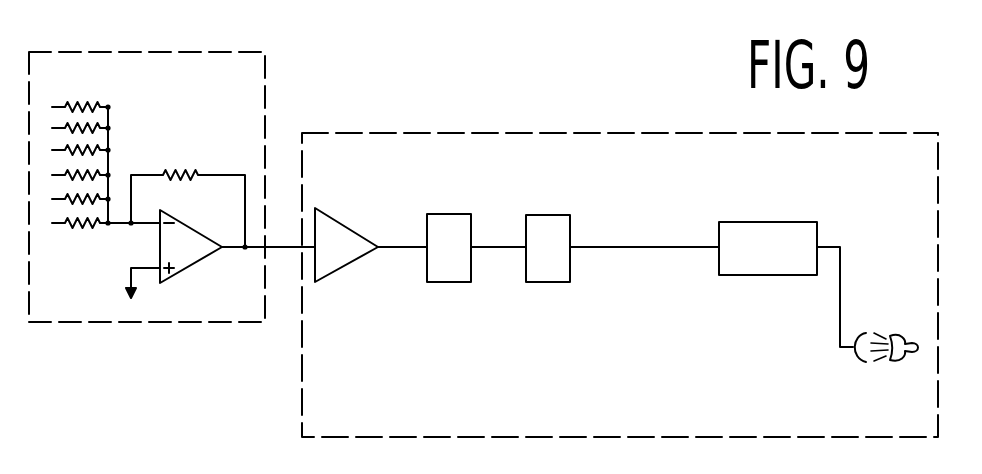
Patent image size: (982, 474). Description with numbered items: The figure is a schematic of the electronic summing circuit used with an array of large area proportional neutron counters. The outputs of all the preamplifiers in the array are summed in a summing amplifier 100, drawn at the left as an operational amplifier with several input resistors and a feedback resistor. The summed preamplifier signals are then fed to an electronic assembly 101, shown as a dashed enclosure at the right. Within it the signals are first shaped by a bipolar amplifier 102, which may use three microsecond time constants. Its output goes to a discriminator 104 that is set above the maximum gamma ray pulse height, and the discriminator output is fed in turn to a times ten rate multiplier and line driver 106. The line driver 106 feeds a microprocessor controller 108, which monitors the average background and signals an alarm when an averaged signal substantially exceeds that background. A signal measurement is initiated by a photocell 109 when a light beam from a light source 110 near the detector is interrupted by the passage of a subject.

The summing amplifier 100 is at (202, 53).
The electronic assembly 101 is at (530, 133).
The bipolar amplifier 102 is at (343, 268).
The discriminator 104 is at (472, 272).
The times 10 rate multiplier and line driver 106 is at (570, 270).
The microprocessor controller 108 is at (737, 275).
The photocell 109 is at (857, 356).
The light source 110 is at (903, 361).